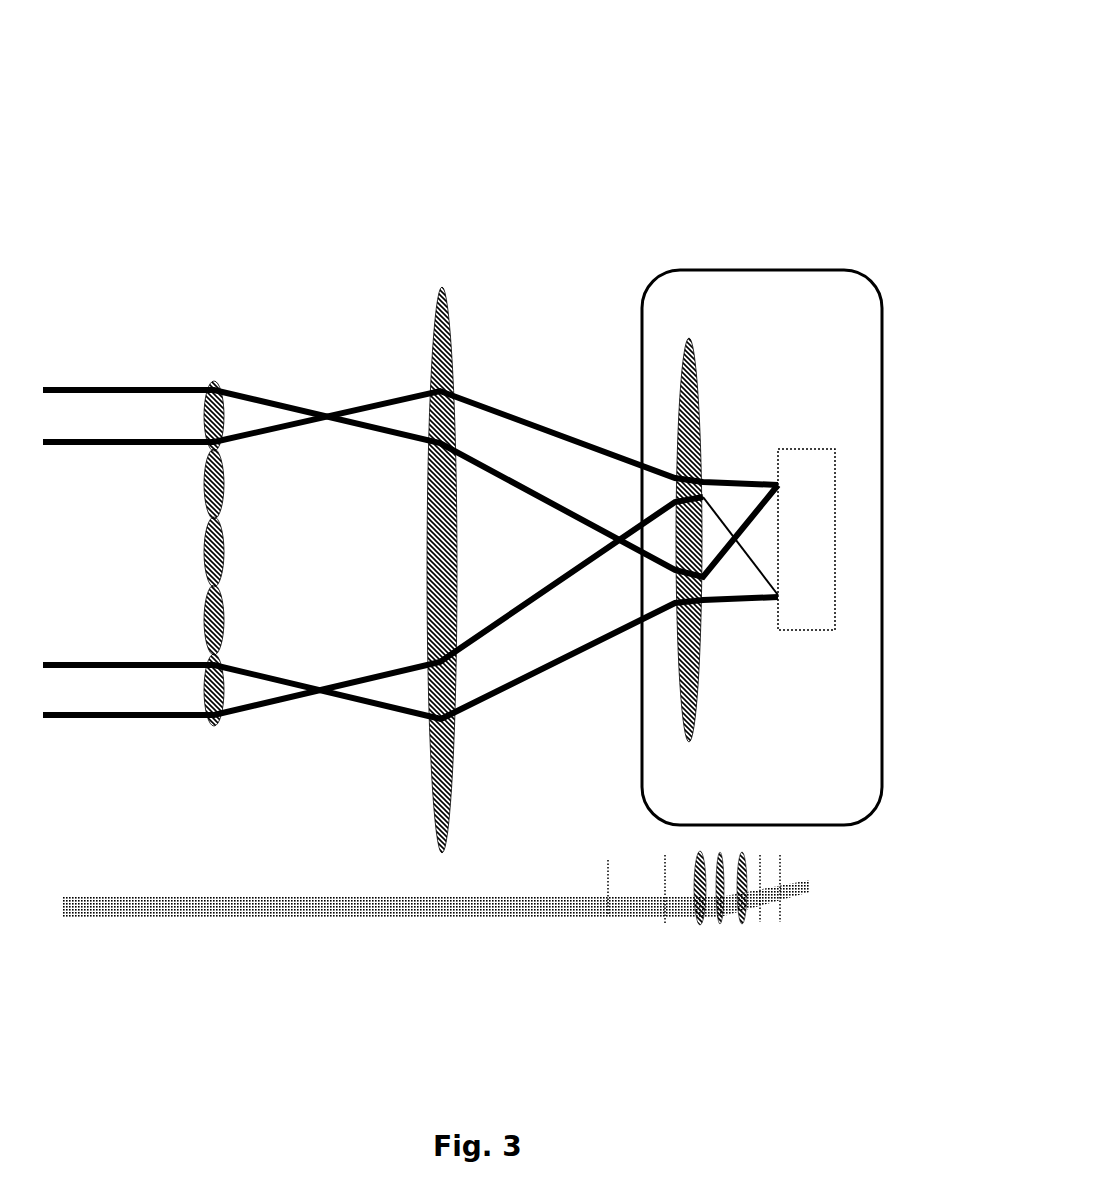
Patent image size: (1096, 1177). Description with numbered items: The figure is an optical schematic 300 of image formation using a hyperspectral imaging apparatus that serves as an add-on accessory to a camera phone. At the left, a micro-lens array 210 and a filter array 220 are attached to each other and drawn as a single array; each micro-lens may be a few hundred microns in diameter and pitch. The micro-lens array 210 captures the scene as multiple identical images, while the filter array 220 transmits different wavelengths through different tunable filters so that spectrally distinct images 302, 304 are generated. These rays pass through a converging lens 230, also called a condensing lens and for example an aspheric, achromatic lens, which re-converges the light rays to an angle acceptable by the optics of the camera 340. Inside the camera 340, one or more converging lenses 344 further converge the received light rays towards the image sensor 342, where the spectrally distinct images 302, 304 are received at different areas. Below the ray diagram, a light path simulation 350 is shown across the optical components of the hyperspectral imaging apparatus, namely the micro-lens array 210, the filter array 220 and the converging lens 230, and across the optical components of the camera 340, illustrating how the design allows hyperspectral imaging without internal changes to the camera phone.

The optical schematic 300 is at (813, 55).
The micro-lens array 210 is at (251, 638).
The filter array 220 is at (213, 350).
The converging lens 230 is at (440, 268).
The spectrally distinct image 302 is at (289, 383).
The spectrally distinct image 304 is at (270, 648).
The camera 340 is at (758, 254).
The image sensor 342 is at (805, 448).
The converging lens 344 is at (698, 675).
The light path simulation 350 is at (126, 875).